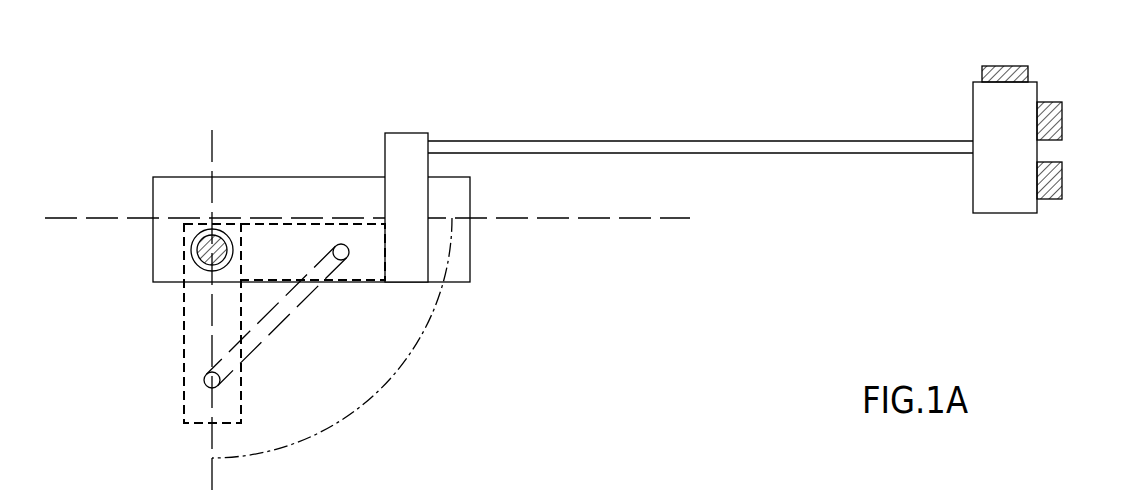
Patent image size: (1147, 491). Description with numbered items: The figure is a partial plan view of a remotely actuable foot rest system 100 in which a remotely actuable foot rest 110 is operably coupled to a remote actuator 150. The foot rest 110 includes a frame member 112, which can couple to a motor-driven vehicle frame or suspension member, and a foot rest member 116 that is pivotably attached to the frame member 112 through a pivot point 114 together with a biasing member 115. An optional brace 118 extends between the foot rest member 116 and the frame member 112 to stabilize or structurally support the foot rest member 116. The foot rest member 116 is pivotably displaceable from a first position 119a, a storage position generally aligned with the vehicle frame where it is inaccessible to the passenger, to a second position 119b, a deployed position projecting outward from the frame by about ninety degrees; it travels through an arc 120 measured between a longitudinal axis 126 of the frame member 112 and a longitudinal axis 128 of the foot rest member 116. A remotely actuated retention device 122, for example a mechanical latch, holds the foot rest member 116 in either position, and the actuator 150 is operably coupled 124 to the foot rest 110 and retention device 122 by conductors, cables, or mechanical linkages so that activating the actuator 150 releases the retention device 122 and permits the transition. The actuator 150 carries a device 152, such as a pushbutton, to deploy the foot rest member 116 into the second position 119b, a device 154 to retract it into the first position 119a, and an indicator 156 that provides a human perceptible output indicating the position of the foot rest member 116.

The remotely actuable foot rest system 100 is at (822, 106).
The remotely actuable foot rest 110 is at (148, 318).
The frame member 112 is at (305, 177).
The pivot point 114 is at (196, 236).
The biasing member 115 is at (190, 252).
The foot rest member 116 is at (285, 222).
The brace 118 is at (283, 322).
The first position 119a is at (301, 263).
The second position 119b is at (235, 323).
The arc 120 is at (398, 372).
The remotely actuated retention device 122 is at (405, 133).
The coupling 124 is at (775, 155).
The longitudinal axis of the frame member 126 is at (560, 220).
The longitudinal axis of the foot rest member 128 is at (212, 483).
The actuator 150 is at (1012, 225).
The device to deploy 152 is at (1062, 120).
The device to retract 154 is at (1062, 182).
The indicator 156 is at (1008, 66).